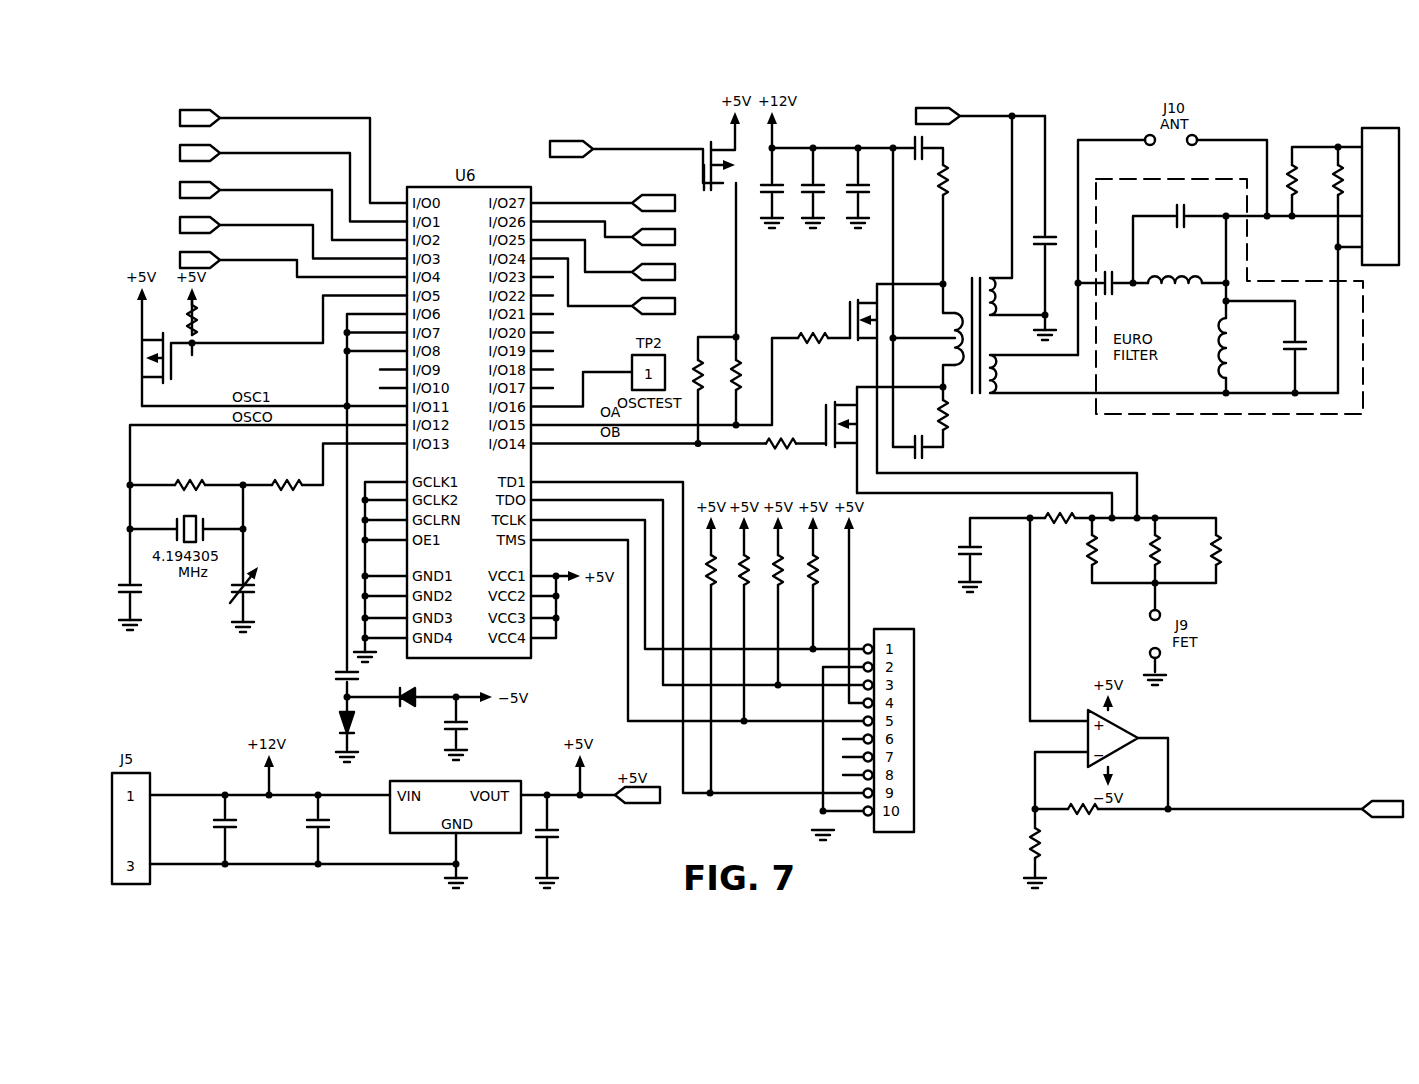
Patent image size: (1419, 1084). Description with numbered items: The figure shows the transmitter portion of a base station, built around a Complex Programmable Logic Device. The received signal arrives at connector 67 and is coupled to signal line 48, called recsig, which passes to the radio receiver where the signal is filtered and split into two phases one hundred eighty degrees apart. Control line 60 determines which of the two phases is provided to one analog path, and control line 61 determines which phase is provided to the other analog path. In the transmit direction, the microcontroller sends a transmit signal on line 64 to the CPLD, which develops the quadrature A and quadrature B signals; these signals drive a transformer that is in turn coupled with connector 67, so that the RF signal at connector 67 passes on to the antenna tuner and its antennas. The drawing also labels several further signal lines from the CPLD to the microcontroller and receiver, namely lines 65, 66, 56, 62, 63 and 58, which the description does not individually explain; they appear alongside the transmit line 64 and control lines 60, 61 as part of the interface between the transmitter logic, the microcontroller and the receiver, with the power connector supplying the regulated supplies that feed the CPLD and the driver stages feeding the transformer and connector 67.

The transmit signal line 64 is at (180, 119).
The RUN signal 65 is at (180, 153).
The reset delay / interrupt signal 66 is at (180, 190).
The RECEIVE signal 56 is at (180, 225).
The signal line 48 is at (915, 113).
The control line 60 is at (677, 203).
The control line 61 is at (677, 237).
The BOOST signal 62 is at (677, 272).
The XTEST signal 63 is at (677, 306).
The connector 67 is at (1358, 136).
The ATODO analog-to-digital output signal 58 is at (1383, 818).